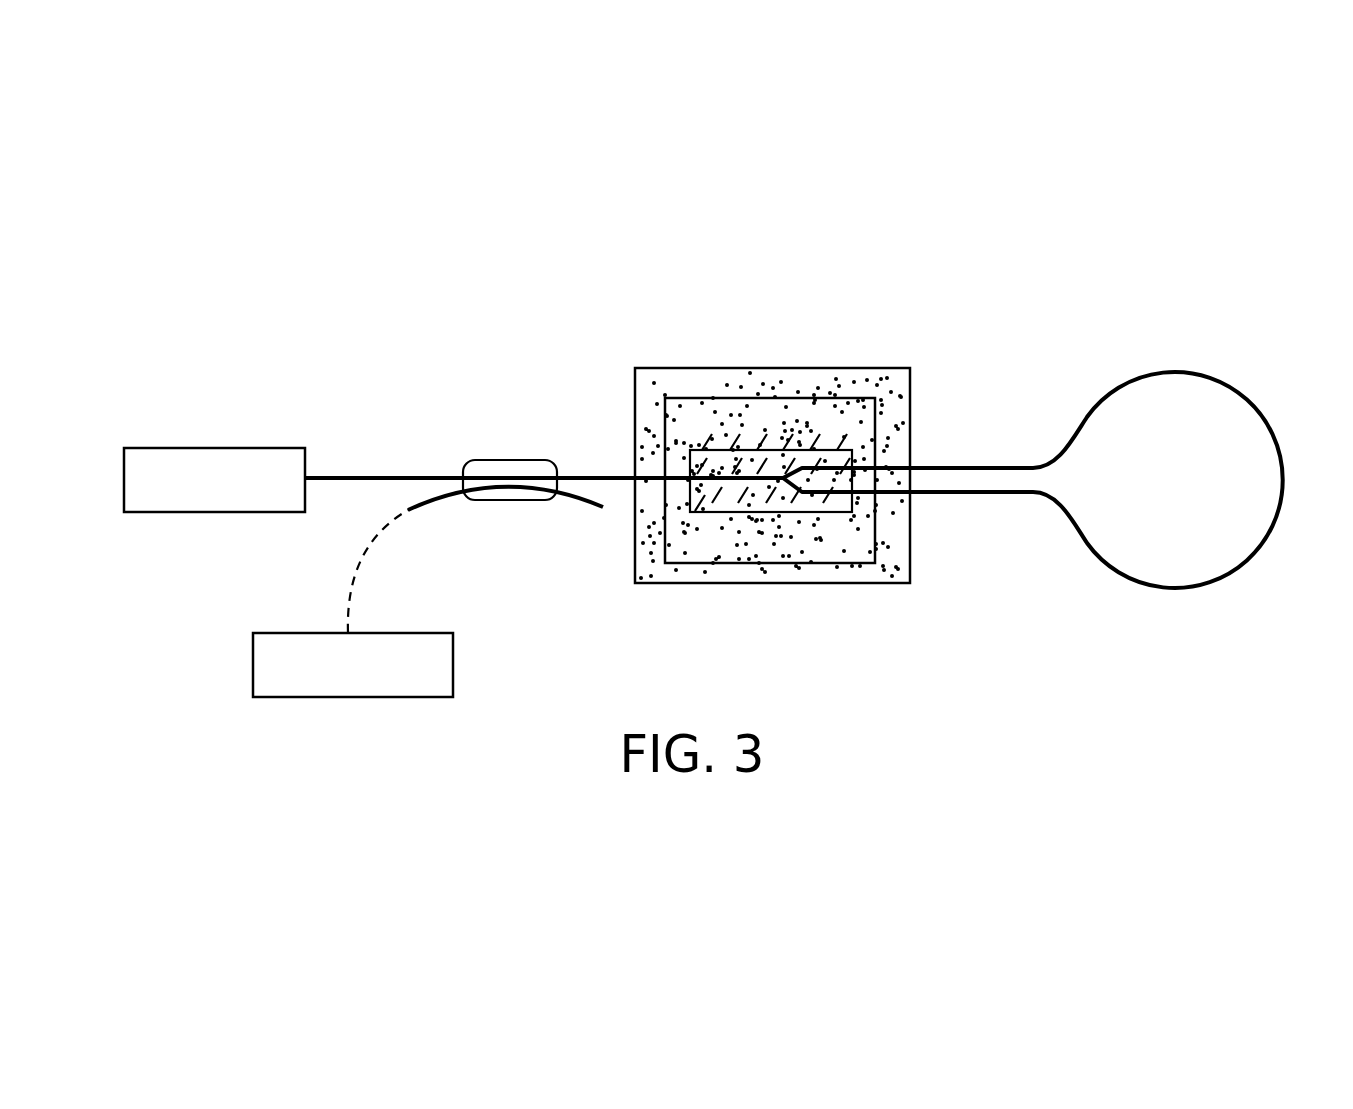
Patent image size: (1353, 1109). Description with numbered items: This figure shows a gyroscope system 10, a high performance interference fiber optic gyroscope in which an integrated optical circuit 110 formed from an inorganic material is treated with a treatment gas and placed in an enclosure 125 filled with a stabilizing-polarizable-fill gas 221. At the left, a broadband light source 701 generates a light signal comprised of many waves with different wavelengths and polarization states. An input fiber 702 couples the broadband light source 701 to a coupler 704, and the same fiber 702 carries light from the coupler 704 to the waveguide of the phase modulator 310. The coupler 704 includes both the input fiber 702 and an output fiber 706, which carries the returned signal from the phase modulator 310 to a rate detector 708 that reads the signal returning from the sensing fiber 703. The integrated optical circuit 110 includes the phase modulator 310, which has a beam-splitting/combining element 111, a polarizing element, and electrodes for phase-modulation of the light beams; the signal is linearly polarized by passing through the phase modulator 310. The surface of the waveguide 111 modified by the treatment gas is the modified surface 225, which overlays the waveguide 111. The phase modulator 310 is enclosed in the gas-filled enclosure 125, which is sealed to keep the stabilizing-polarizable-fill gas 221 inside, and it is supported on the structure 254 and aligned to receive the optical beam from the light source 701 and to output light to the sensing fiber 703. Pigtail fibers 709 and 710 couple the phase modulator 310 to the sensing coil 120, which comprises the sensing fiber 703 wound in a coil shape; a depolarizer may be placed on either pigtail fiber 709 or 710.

The gyroscope system 10 is at (422, 318).
The broadband light source 701 is at (193, 448).
The input fiber 702 is at (403, 476).
The coupler 704 is at (492, 460).
The output fiber 706 is at (430, 503).
The rate detector 708 is at (355, 697).
The enclosure 125 is at (633, 400).
The stabilizing-polarizable-fill gas 221 is at (712, 394).
The structure 254 is at (665, 538).
The integrated optical circuit 110 is at (717, 465).
The phase modulator 310 is at (763, 460).
The modified surface 225 is at (822, 453).
The waveguide 111 is at (803, 497).
The pigtail fiber 709 is at (1018, 465).
The pigtail fiber 710 is at (1018, 495).
The sensing fiber 703 is at (1175, 366).
The sensing coil 120 is at (1152, 493).